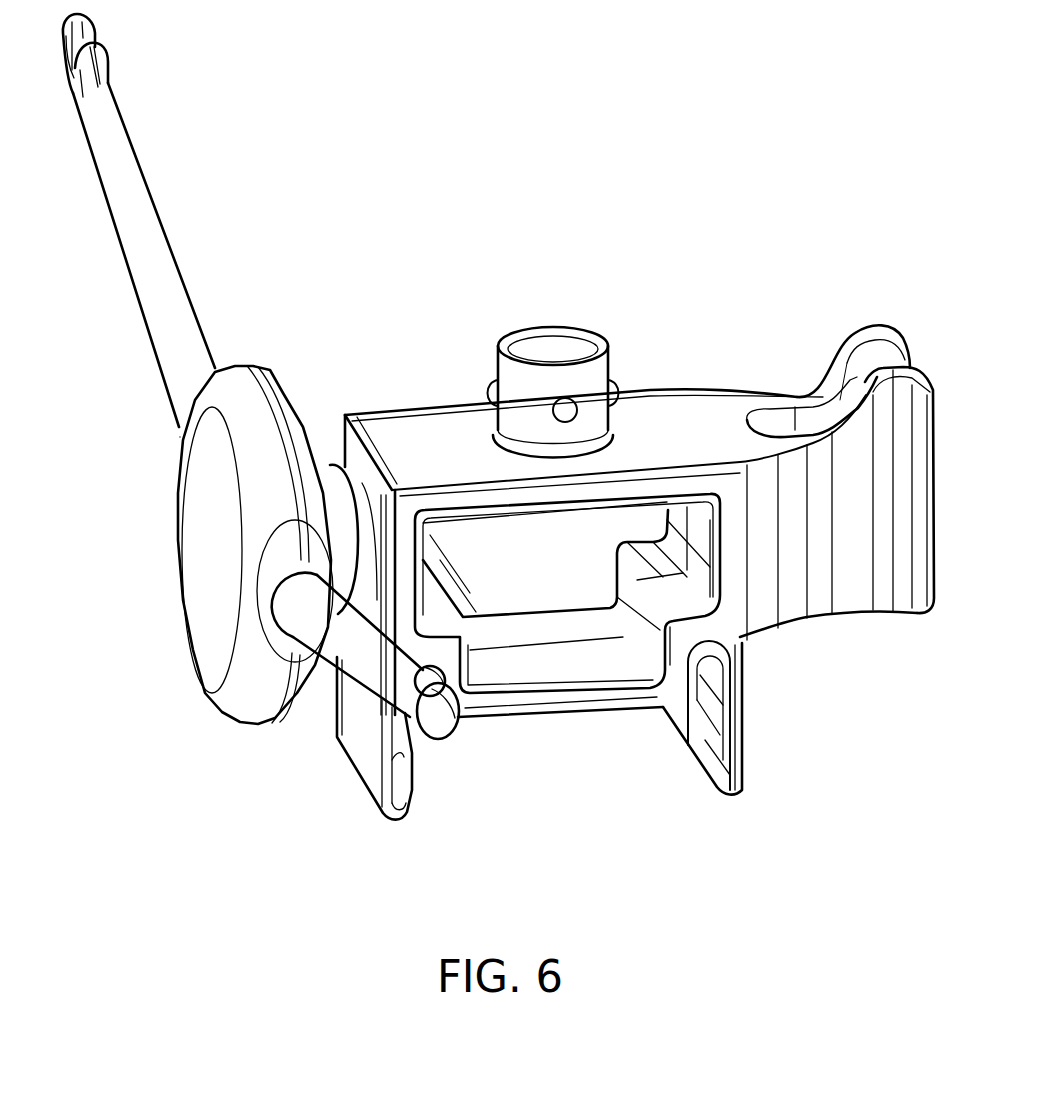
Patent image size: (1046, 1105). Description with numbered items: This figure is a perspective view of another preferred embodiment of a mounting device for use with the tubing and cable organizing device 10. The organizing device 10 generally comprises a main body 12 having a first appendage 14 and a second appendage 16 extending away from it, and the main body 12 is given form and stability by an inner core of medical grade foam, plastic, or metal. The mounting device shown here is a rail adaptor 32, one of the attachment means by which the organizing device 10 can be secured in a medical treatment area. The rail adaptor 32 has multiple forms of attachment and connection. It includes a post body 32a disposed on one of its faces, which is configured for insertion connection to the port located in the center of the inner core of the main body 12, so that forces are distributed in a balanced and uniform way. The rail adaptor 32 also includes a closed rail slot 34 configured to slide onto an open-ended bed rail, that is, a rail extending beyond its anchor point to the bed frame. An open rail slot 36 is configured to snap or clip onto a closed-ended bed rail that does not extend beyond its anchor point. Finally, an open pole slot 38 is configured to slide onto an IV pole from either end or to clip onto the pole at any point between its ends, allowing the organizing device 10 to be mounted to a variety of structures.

The tubing and cable organizing device 10 is at (130, 492).
The main body 12 is at (232, 710).
The first appendage 14 is at (343, 648).
The second appendage 16 is at (125, 265).
The rail adaptor 32 is at (410, 407).
The post body 32a is at (553, 340).
The closed rail slot 34 is at (704, 596).
The open rail slot 36 is at (702, 750).
The open pole slot 38 is at (837, 398).